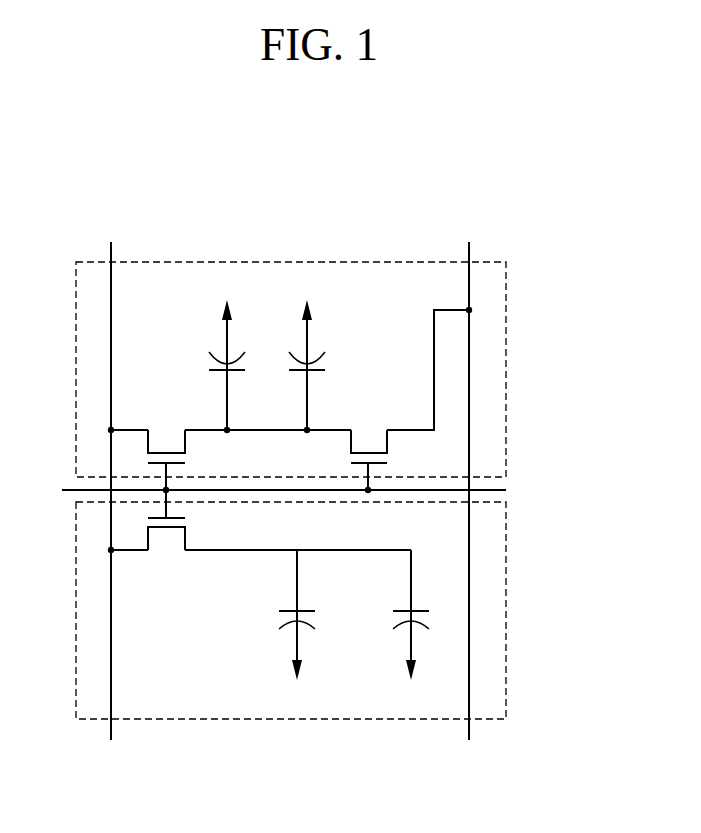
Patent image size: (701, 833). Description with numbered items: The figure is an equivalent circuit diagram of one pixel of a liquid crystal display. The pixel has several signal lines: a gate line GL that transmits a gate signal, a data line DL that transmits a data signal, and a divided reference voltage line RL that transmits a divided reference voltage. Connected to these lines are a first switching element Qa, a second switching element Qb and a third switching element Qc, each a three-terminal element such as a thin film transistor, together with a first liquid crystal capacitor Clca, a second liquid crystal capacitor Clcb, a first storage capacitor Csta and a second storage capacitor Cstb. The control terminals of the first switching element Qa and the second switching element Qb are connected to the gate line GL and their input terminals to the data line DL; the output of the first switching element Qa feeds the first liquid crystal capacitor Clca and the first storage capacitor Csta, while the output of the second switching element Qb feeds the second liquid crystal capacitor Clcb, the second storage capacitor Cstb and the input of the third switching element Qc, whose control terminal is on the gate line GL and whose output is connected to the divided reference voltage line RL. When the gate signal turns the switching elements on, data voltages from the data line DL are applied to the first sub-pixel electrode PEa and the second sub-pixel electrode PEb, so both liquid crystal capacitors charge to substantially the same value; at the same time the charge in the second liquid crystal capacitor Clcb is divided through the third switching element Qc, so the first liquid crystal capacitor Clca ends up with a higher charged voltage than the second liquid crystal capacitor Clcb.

The data line DL is at (113, 478).
The divided reference voltage line RL is at (468, 478).
The gate line GL is at (270, 493).
The second sub-pixel electrode PEb is at (506, 370).
The first sub-pixel electrode PEa is at (506, 610).
The second switching element Qb is at (166, 447).
The third switching element Qc is at (369, 446).
The first switching element Qa is at (166, 534).
The first storage capacitor Csta is at (201, 365).
The first liquid crystal capacitor Clca is at (333, 365).
The second storage capacitor Cstb is at (267, 615).
The second liquid crystal capacitor Clcb is at (382, 615).